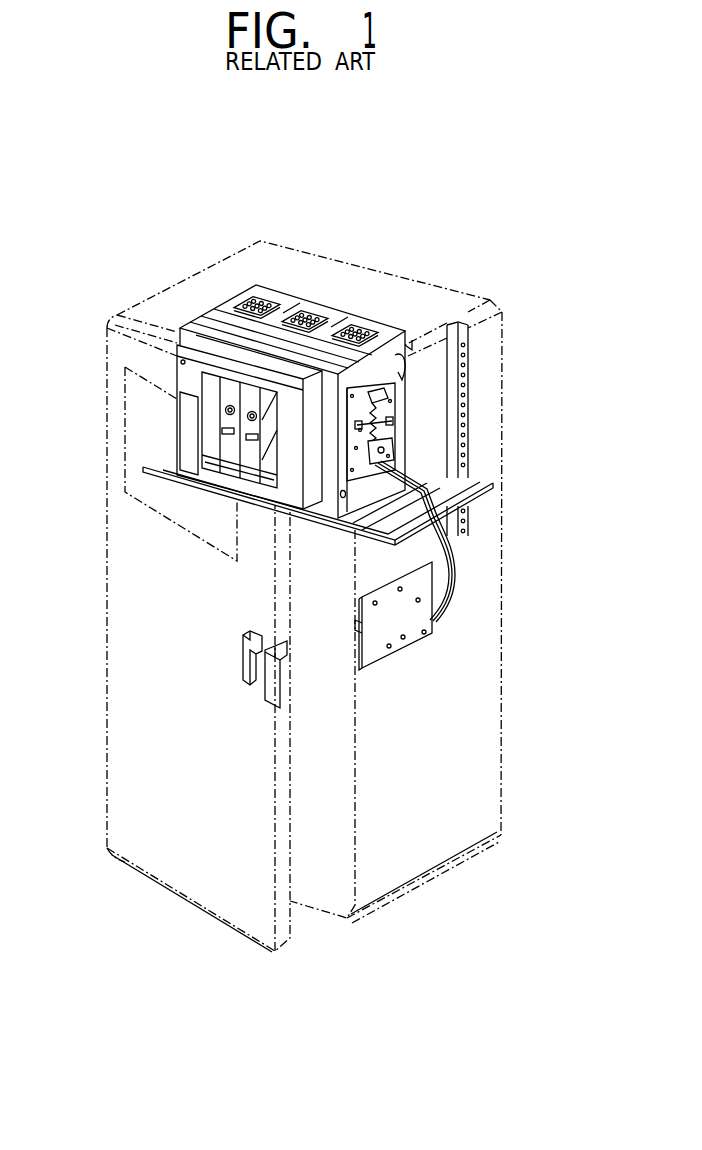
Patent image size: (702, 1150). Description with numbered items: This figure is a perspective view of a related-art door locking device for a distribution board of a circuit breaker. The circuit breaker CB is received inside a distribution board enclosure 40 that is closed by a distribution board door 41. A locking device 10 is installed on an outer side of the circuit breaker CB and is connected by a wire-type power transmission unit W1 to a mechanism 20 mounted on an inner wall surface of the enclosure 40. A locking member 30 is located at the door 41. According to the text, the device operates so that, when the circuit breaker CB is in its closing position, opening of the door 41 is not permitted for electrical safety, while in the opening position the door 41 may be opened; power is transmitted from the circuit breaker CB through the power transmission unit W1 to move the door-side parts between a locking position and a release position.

The circuit breaker CB is at (320, 310).
The interlock device 10 is at (398, 448).
The power transmission unit W1 is at (452, 562).
The connection box 20 is at (434, 626).
The door lock 30 is at (268, 671).
The cabinet 40 is at (491, 706).
The door 41 is at (200, 893).